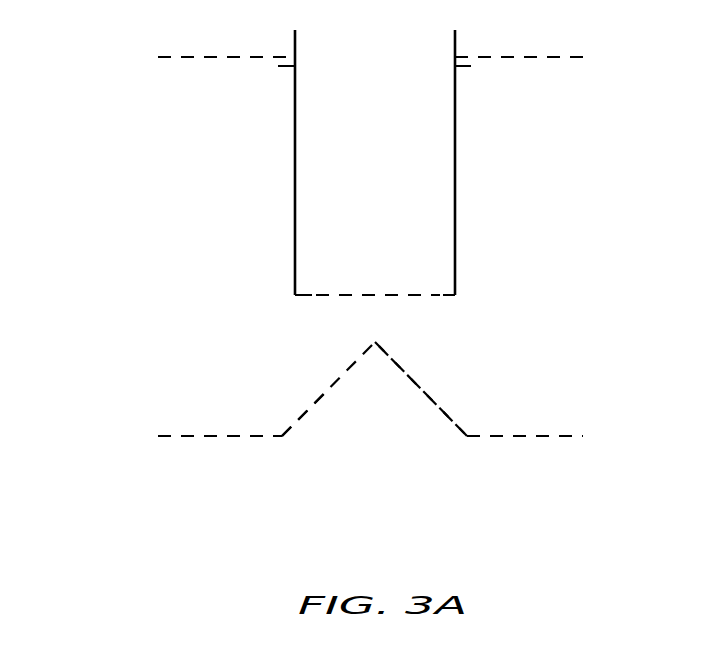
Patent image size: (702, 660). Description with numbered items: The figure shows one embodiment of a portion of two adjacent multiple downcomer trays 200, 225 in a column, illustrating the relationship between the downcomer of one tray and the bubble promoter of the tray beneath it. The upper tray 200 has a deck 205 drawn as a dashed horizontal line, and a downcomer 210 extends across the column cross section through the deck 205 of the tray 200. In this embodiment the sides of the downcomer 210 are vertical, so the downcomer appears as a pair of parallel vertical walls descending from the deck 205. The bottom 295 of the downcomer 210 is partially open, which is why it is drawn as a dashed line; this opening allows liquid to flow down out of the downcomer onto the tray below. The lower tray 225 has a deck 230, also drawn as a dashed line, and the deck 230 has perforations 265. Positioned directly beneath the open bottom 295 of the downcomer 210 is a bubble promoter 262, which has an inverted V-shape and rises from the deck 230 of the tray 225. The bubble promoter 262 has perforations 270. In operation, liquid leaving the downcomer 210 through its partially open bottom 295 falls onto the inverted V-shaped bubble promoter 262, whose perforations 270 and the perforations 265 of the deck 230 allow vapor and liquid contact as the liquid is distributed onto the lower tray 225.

The multiple downcomer tray 200 is at (131, 47).
The deck 205 is at (191, 56).
The downcomer 210 is at (455, 92).
The bottom of downcomer 295 is at (330, 298).
The multiple downcomer tray 225 is at (125, 426).
The deck 230 is at (190, 433).
The perforations 265 is at (205, 439).
The perforations 270 is at (291, 428).
The bubble promoter 262 is at (411, 378).